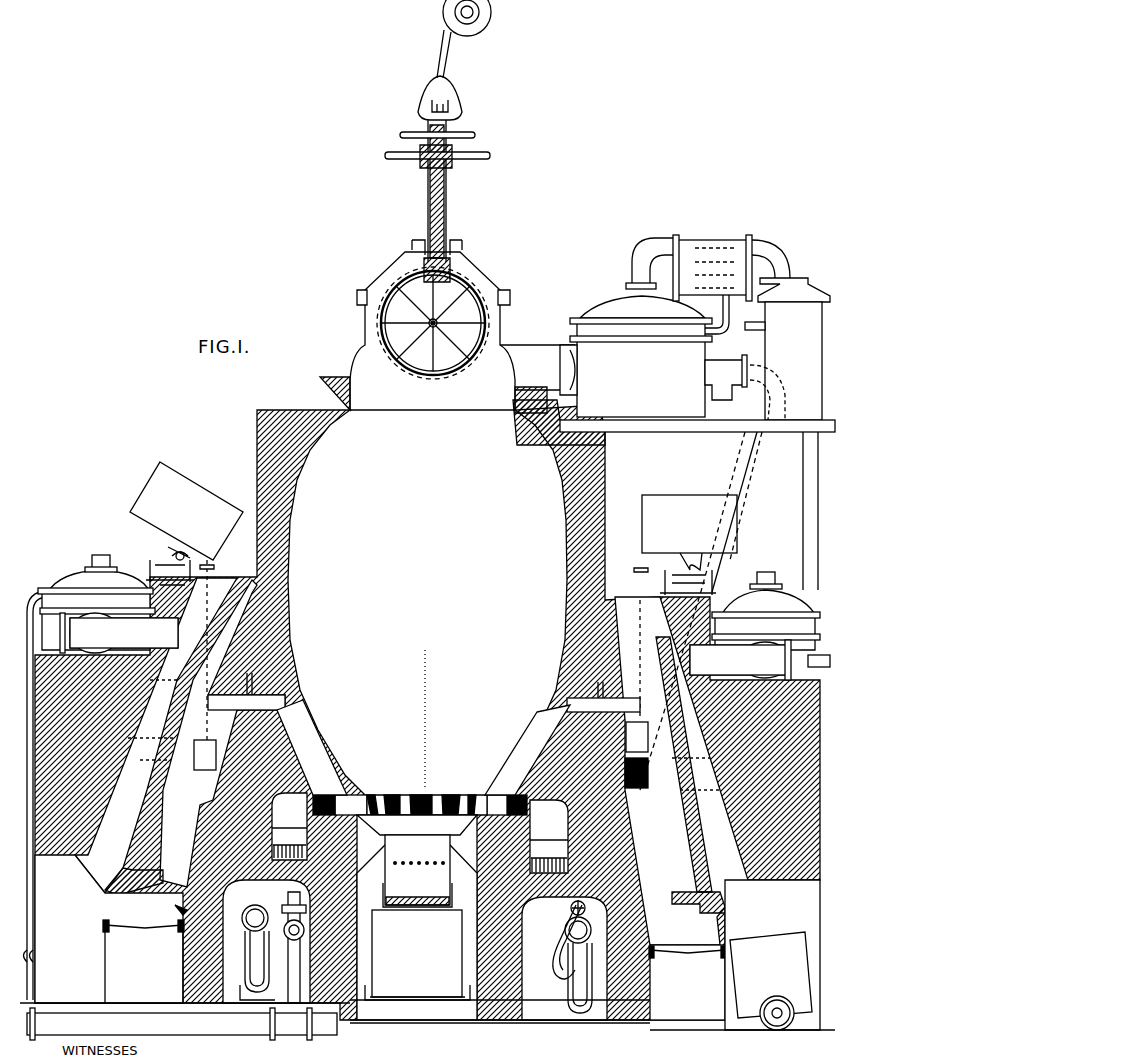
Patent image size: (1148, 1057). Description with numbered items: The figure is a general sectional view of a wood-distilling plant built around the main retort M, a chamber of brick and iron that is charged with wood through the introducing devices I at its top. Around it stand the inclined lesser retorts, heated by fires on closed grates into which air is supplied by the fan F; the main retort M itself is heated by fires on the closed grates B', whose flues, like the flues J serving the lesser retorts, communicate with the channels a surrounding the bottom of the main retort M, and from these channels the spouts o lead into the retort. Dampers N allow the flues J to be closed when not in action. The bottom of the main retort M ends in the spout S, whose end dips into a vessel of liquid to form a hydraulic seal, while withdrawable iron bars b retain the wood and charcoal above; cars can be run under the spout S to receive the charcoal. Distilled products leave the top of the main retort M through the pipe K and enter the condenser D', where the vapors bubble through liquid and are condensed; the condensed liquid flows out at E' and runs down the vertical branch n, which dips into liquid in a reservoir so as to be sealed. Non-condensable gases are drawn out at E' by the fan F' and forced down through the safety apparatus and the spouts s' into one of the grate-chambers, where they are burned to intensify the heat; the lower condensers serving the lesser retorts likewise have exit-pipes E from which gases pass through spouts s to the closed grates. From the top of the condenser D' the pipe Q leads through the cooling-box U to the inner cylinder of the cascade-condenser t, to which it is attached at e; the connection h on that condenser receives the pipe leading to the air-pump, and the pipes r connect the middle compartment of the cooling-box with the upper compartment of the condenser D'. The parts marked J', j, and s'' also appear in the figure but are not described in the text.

The closed grates B' is at (420, 848).
The condenser D' is at (636, 356).
The exit-pipes E is at (819, 661).
The pipe outlet E' is at (726, 377).
The fan F is at (266, 941).
The fan F' is at (564, 958).
The wood-introducing devices I is at (433, 332).
The flues J is at (423, 747).
The flue outlet block J' is at (420, 833).
The pipe K is at (539, 367).
The main retort M is at (427, 710).
The dampers N is at (424, 696).
The pipe Q is at (407, 413).
The spout S is at (417, 871).
The cooling-box U is at (712, 258).
The channels a is at (419, 796).
The iron bars b is at (419, 855).
The attachment point e is at (784, 259).
The air-pump connection h is at (750, 338).
The pipe j is at (38, 795).
The vertical branch n is at (760, 392).
The spouts o is at (422, 796).
The pipes r is at (722, 314).
The spouts s is at (178, 903).
The spouts s' is at (665, 950).
The rod s'' is at (284, 946).
The cascade-condenser t is at (794, 349).